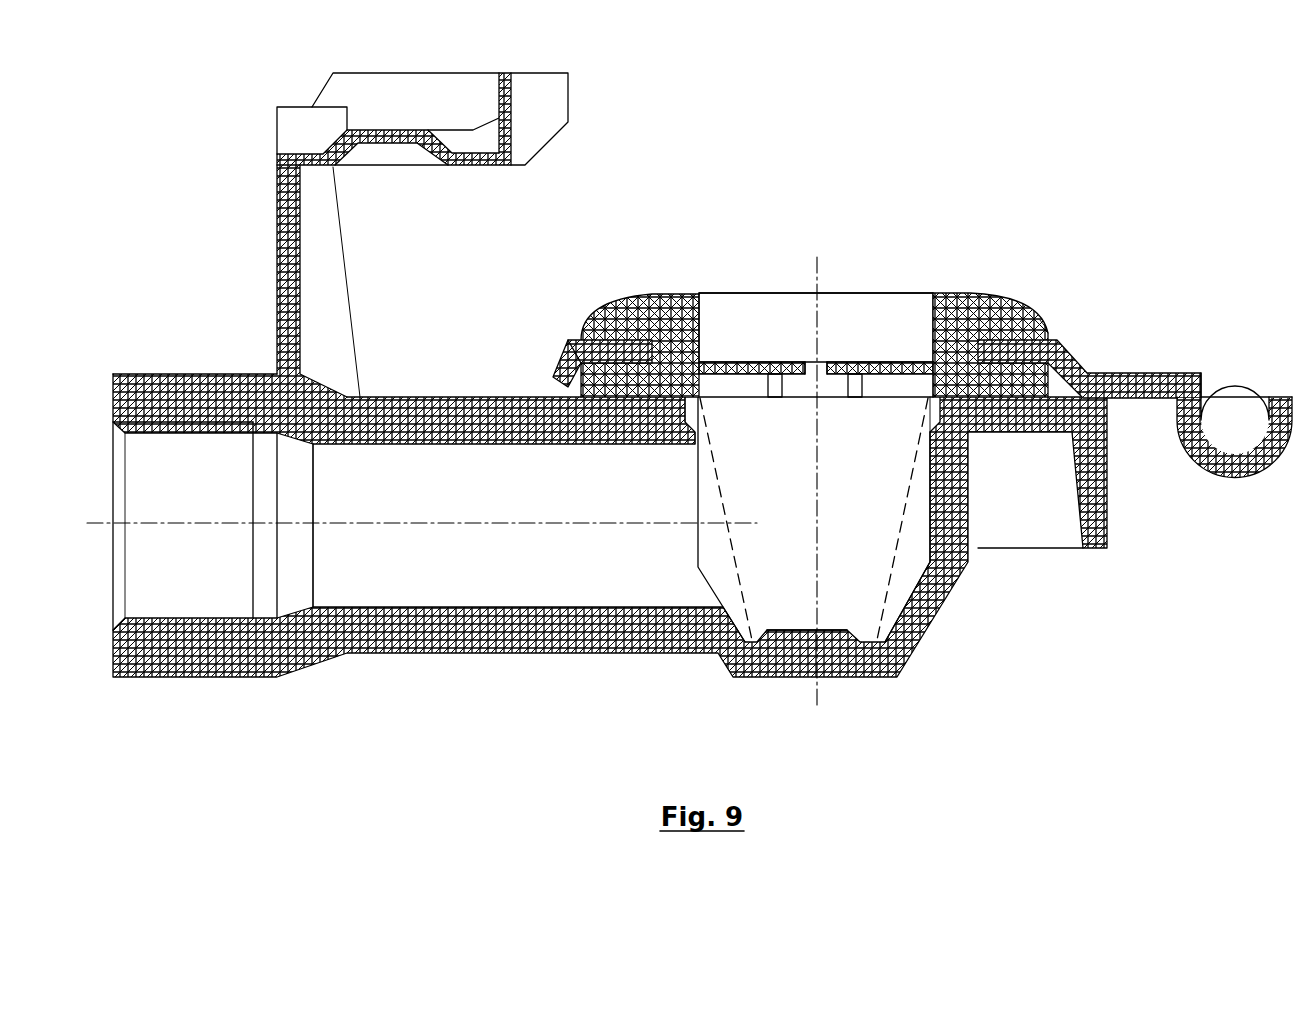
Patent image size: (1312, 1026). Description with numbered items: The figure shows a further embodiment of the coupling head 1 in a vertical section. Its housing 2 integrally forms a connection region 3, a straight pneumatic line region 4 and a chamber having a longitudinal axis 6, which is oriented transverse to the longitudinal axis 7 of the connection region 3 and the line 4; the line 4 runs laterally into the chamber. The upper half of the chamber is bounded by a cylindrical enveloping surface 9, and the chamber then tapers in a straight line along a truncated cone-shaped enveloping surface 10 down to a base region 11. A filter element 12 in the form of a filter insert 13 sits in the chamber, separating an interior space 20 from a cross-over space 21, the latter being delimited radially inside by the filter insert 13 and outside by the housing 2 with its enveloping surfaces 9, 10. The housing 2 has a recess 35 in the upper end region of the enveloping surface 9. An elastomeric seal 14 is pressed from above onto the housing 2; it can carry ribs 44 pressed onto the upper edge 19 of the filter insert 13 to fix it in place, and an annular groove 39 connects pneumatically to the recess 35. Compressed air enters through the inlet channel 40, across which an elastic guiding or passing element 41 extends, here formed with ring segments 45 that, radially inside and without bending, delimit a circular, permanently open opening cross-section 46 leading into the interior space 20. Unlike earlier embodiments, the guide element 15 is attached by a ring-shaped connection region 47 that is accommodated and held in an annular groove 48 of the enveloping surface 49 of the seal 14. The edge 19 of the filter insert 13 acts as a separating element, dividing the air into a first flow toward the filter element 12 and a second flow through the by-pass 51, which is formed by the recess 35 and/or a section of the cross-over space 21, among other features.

The coupling head 1 is at (835, 180).
The housing 2 is at (568, 640).
The connection region 3 is at (174, 587).
The pneumatic line region 4 is at (468, 587).
The longitudinal axis 6 is at (817, 698).
The longitudinal axis 7 is at (98, 523).
The cylindrical enveloping surface 9 is at (930, 487).
The truncated cone-shaped enveloping surface 10 is at (913, 583).
The base region 11 is at (850, 623).
The filter element 12 is at (814, 519).
The filter insert 13 is at (738, 563).
The seal 14 is at (992, 310).
The guide element 15 is at (1240, 470).
The upper edge 19 is at (930, 400).
The interior space 20 is at (774, 611).
The cross-over space 21 is at (712, 553).
The recess 35 is at (692, 418).
The annular groove 39 is at (942, 400).
The inlet channel 40 is at (774, 329).
The guiding or passing element 41 is at (903, 350).
The ribs 44 is at (773, 389).
The ring segments 45 is at (720, 362).
The opening cross-section 46 is at (823, 370).
The ring-shaped connection region 47 is at (1018, 348).
The annular groove 48 is at (618, 340).
The enveloping surface 49 is at (1050, 332).
The by-pass 51 is at (692, 380).